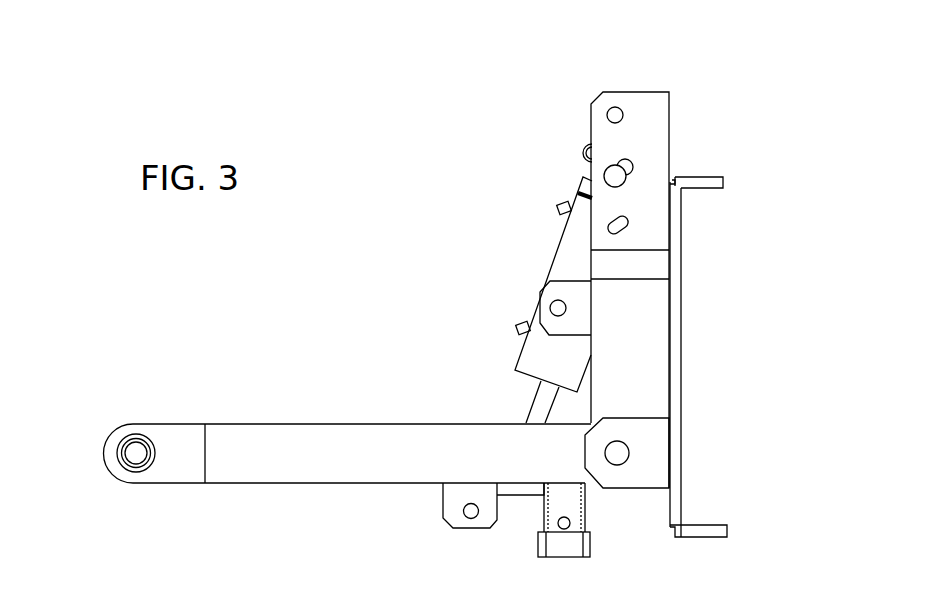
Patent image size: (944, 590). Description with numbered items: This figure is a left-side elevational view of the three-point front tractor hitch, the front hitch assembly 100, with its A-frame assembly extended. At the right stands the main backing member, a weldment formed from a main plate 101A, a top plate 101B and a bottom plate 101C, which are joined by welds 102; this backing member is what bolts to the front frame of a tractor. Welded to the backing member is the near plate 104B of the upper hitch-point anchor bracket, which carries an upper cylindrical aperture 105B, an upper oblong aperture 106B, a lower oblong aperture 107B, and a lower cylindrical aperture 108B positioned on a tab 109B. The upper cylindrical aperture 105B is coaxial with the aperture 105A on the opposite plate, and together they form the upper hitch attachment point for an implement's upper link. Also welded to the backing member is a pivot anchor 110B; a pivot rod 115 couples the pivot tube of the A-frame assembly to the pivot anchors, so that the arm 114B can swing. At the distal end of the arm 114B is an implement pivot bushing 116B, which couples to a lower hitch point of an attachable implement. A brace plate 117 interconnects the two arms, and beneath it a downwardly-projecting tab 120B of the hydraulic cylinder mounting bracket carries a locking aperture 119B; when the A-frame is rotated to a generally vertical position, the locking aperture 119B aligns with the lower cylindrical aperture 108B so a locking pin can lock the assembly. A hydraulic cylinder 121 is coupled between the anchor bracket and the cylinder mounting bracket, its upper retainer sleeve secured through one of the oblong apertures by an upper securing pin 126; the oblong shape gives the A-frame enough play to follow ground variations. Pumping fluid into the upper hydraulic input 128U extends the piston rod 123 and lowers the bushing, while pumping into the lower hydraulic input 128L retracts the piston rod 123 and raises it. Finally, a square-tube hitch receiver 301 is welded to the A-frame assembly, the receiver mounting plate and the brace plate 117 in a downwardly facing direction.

The front hitch assembly 100 is at (699, 91).
The main plate 101A is at (675, 343).
The top plate 101B is at (700, 183).
The bottom plate 101C is at (700, 533).
The welds 102 is at (676, 181).
The plate 104B is at (655, 118).
The upper cylindrical aperture 105A is at (293, 587).
The upper cylindrical aperture 105B is at (606, 110).
The upper oblong aperture 106B is at (633, 161).
The lower oblong aperture 107B is at (634, 220).
The lower cylindrical aperture 108B is at (551, 298).
The tab 109B is at (552, 308).
The pivot anchor 110B is at (648, 432).
The arm 114B is at (359, 453).
The pivot rod 115 is at (617, 453).
The implement pivot bushing 116B is at (128, 476).
The brace plate 117 is at (520, 490).
The locking aperture 119B is at (463, 518).
The downwardly-projecting tab 120B is at (455, 502).
The hydraulic cylinder 121 is at (565, 258).
The piston rod 123 is at (537, 398).
The upper securing pin 126 is at (615, 176).
The upper hydraulic input 128U is at (560, 208).
The lower hydraulic input 128L is at (520, 328).
The square-tube hitch receiver 301 is at (565, 545).